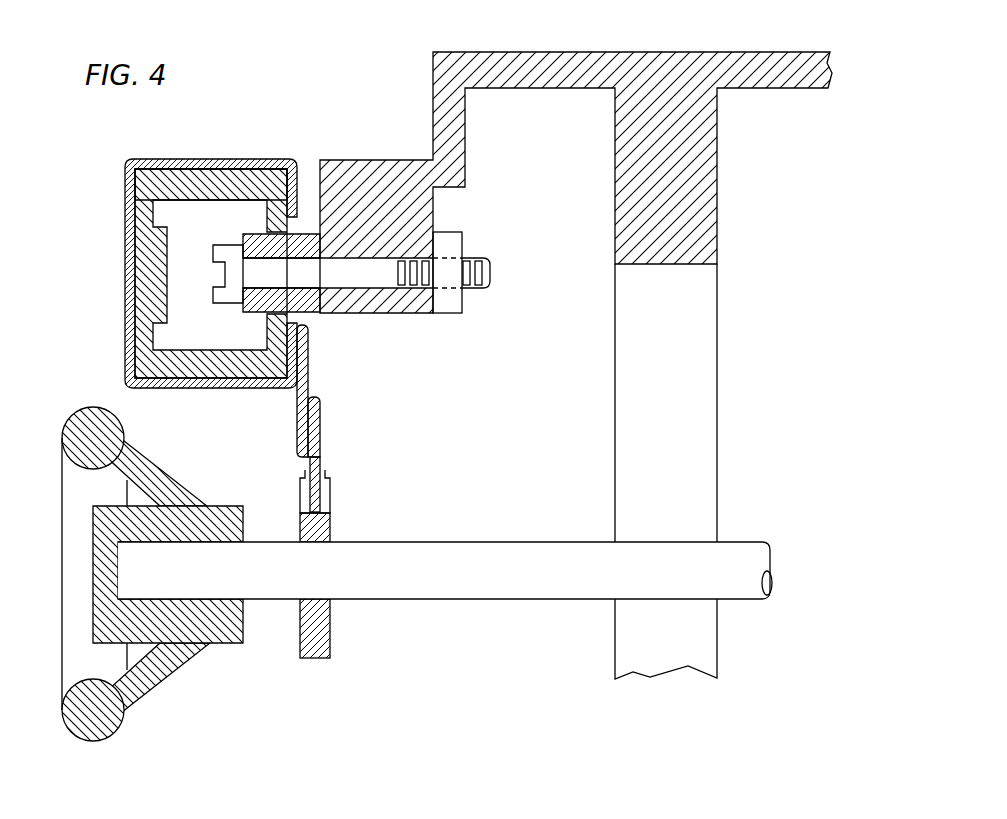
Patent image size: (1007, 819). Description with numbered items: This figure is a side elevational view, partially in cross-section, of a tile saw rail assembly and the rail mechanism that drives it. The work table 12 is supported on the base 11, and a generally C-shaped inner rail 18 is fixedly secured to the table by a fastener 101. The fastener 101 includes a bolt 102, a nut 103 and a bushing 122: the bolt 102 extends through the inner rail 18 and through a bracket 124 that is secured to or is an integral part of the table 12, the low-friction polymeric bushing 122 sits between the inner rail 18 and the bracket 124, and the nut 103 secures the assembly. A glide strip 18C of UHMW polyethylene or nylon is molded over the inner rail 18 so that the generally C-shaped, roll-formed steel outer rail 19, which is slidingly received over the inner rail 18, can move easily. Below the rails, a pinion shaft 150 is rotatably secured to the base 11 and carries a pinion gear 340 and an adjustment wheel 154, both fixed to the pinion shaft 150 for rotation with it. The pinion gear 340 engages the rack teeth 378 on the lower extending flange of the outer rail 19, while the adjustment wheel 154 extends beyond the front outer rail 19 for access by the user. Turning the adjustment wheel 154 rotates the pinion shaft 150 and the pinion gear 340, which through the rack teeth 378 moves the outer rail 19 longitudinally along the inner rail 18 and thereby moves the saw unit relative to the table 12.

The base 11 is at (675, 370).
The work table 12 is at (665, 88).
The inner rail 18 is at (225, 187).
The glide strip 18C is at (206, 173).
The outer rail 19 is at (152, 162).
The fastener 101 is at (409, 333).
The bolt 102 is at (320, 272).
The nut 103 is at (447, 243).
The bushing 122 is at (295, 240).
The bracket 124 is at (372, 188).
The pinion shaft 150 is at (386, 584).
The adjustment wheel 154 is at (160, 662).
The pinion gear 340 is at (320, 638).
The rack teeth 378 is at (316, 488).